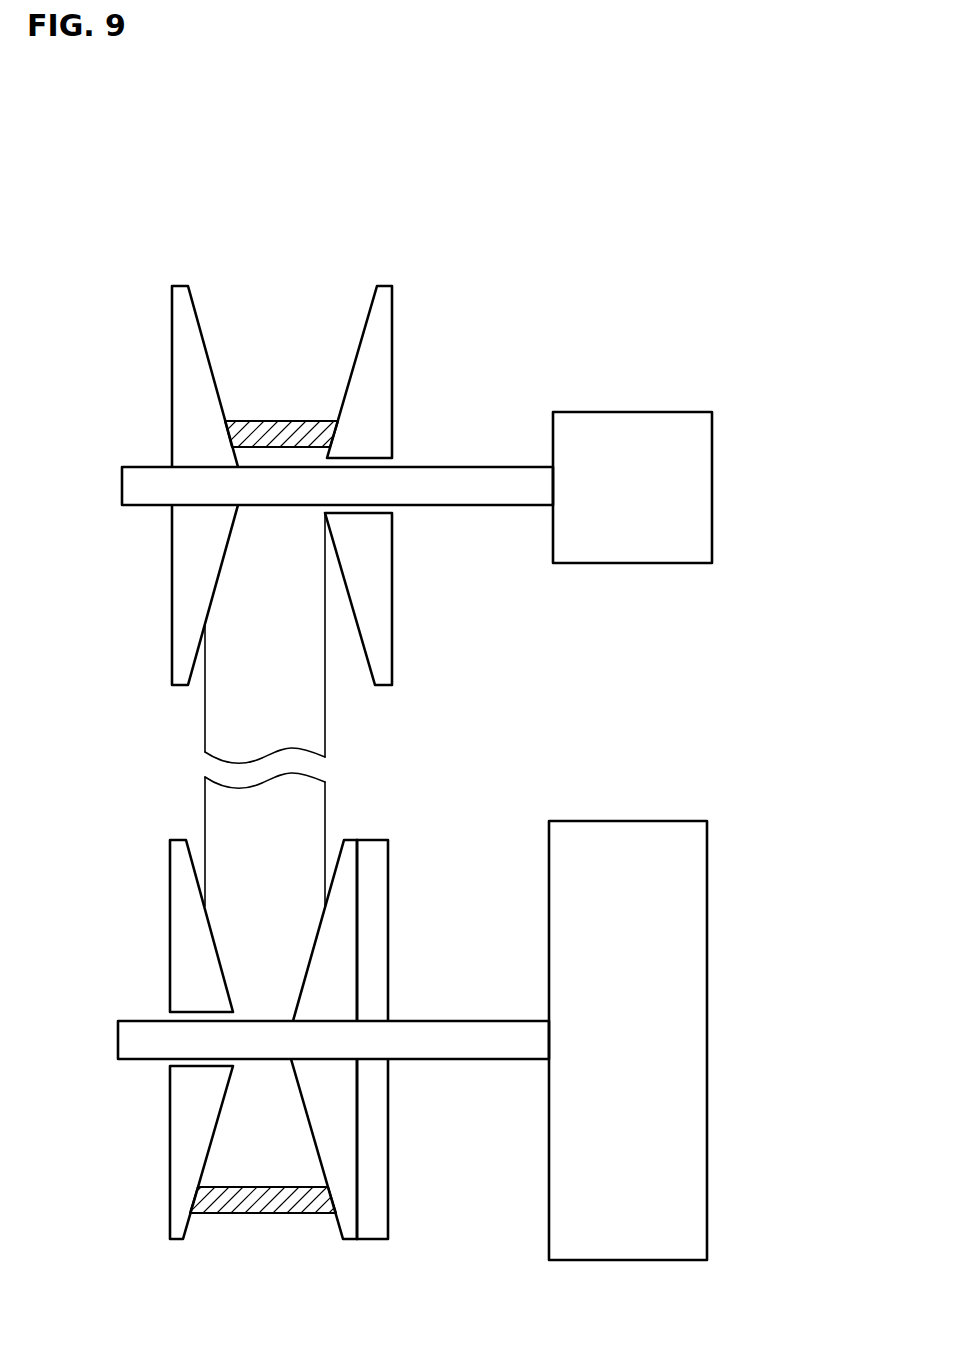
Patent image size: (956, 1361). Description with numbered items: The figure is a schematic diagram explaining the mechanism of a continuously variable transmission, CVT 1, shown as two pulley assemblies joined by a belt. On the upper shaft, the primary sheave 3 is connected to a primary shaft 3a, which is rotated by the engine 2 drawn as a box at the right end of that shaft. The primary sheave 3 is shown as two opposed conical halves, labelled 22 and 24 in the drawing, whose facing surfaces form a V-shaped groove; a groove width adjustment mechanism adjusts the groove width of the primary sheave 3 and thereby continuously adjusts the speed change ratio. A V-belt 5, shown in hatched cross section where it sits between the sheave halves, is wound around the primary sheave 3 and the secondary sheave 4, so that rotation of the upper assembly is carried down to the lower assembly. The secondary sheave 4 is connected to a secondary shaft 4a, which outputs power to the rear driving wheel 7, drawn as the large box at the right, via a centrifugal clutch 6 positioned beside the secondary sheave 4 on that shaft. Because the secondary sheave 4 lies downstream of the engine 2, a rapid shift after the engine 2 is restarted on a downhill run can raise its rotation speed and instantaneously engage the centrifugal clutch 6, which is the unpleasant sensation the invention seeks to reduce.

The CVT 1 is at (132, 357).
The engine 2 is at (677, 412).
The primary sheave 3 is at (282, 451).
The primary shaft 3a is at (463, 467).
The secondary sheave 4 is at (170, 852).
The secondary shaft 4a is at (142, 1053).
The V-belt 5 is at (282, 420).
The centrifugal clutch 6 is at (378, 840).
The rear wheel 7 is at (652, 821).
The fixed sheave 22 is at (172, 617).
The movable sheave 24 is at (392, 646).